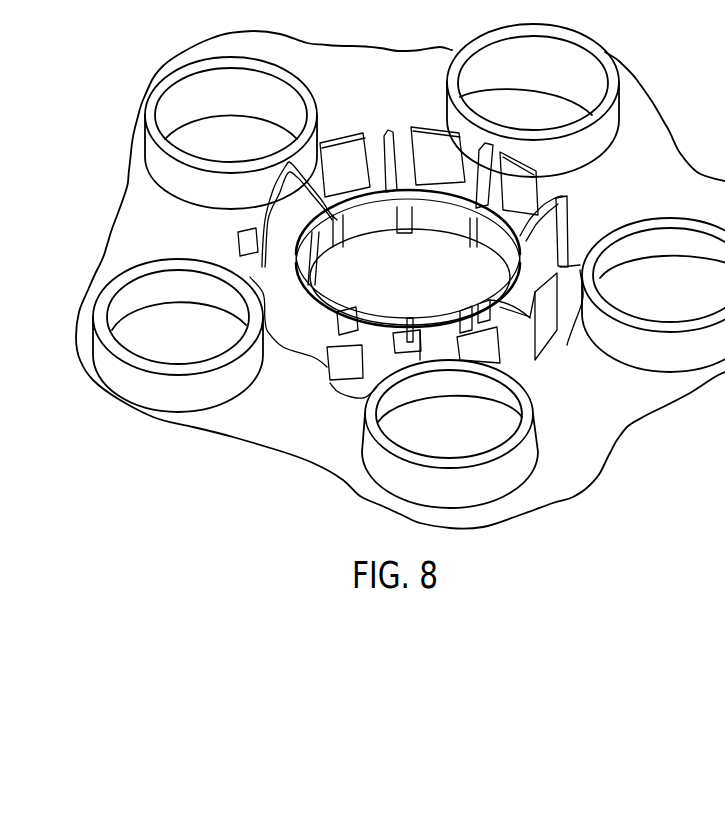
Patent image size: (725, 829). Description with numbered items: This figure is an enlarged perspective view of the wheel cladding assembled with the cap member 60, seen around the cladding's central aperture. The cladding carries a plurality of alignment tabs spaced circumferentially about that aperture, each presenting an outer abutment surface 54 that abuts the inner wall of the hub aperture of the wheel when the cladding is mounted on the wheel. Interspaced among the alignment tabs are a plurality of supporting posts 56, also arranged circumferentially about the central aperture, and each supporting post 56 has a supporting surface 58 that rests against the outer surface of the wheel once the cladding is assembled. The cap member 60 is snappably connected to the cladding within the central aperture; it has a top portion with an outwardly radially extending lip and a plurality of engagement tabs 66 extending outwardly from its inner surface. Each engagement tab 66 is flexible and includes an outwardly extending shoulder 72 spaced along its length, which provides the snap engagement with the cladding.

The outer abutment surface 54 is at (297, 338).
The supporting post 56 is at (337, 394).
The supporting surface 58 is at (343, 314).
The cap member 60 is at (408, 258).
The engagement tab 66 is at (323, 290).
The shoulder 72 is at (500, 307).